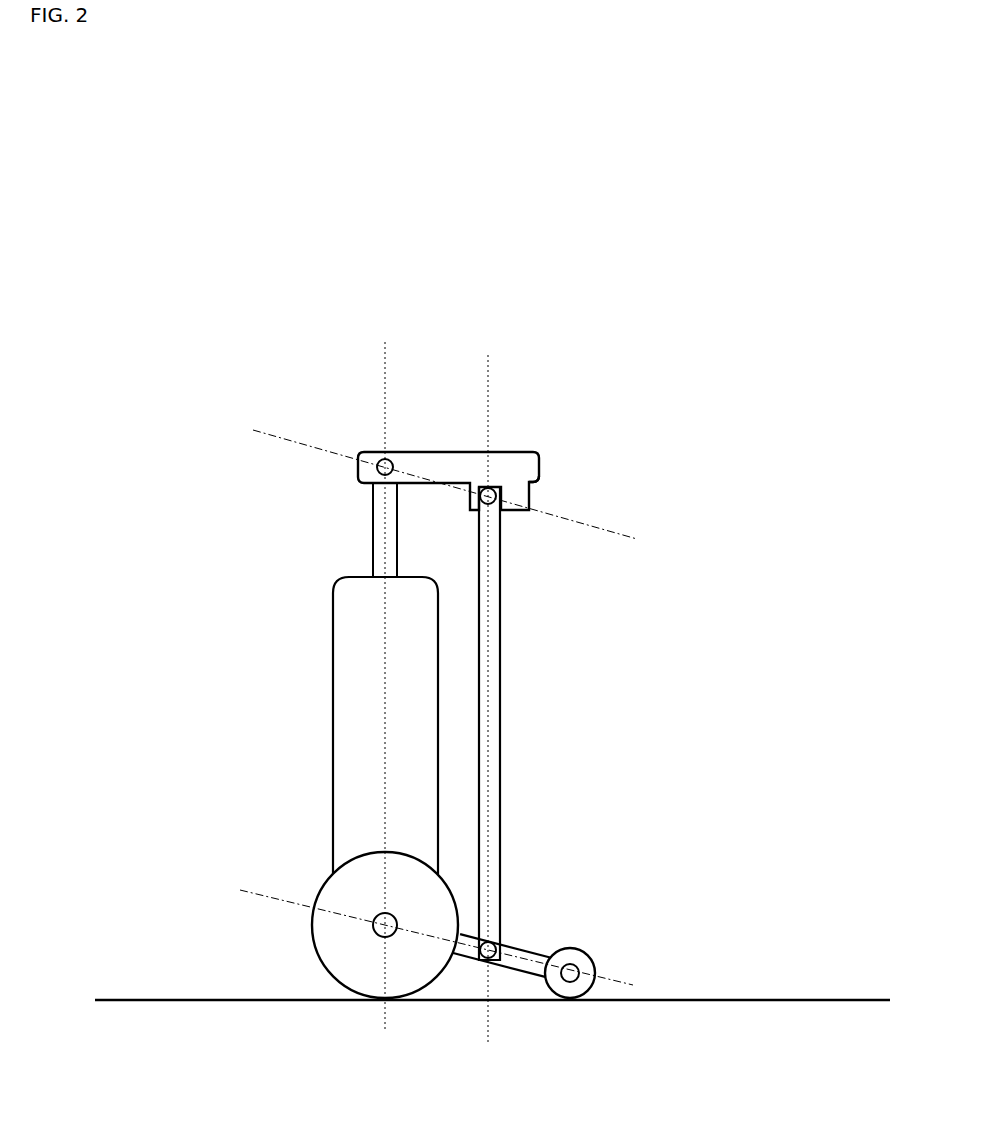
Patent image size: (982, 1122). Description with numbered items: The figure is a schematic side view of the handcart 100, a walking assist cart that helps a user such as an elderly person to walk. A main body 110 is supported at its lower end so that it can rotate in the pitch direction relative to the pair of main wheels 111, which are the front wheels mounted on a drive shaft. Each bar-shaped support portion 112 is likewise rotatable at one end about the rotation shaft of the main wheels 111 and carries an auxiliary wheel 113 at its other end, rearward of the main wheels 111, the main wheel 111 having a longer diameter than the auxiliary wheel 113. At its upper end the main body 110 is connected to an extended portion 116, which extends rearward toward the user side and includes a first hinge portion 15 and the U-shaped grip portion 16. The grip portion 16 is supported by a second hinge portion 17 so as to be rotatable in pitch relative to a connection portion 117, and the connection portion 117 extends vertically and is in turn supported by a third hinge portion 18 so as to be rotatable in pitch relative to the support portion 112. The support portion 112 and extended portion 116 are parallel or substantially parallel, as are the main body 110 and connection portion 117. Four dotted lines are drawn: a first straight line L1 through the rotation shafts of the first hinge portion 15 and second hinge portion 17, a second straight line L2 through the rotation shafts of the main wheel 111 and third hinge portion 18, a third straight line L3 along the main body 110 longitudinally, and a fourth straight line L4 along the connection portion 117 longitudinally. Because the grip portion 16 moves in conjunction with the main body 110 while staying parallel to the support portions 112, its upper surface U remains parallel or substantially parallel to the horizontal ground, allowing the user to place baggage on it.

The handcart 100 is at (305, 427).
The upper surface of the grip portion U is at (433, 448).
The first hinge portion 15 is at (384, 460).
The grip portion 16 is at (510, 467).
The extended portion 116 is at (520, 460).
The second hinge portion 17 is at (486, 489).
The third hinge portion 18 is at (485, 958).
The main body 110 is at (348, 728).
The main wheel 111 is at (332, 898).
The support portion 112 is at (528, 948).
The auxiliary wheel 113 is at (597, 960).
The connection portion 117 is at (493, 678).
The first straight line L1 is at (426, 480).
The second straight line L2 is at (422, 927).
The third straight line L3 is at (384, 670).
The fourth straight line L4 is at (493, 685).